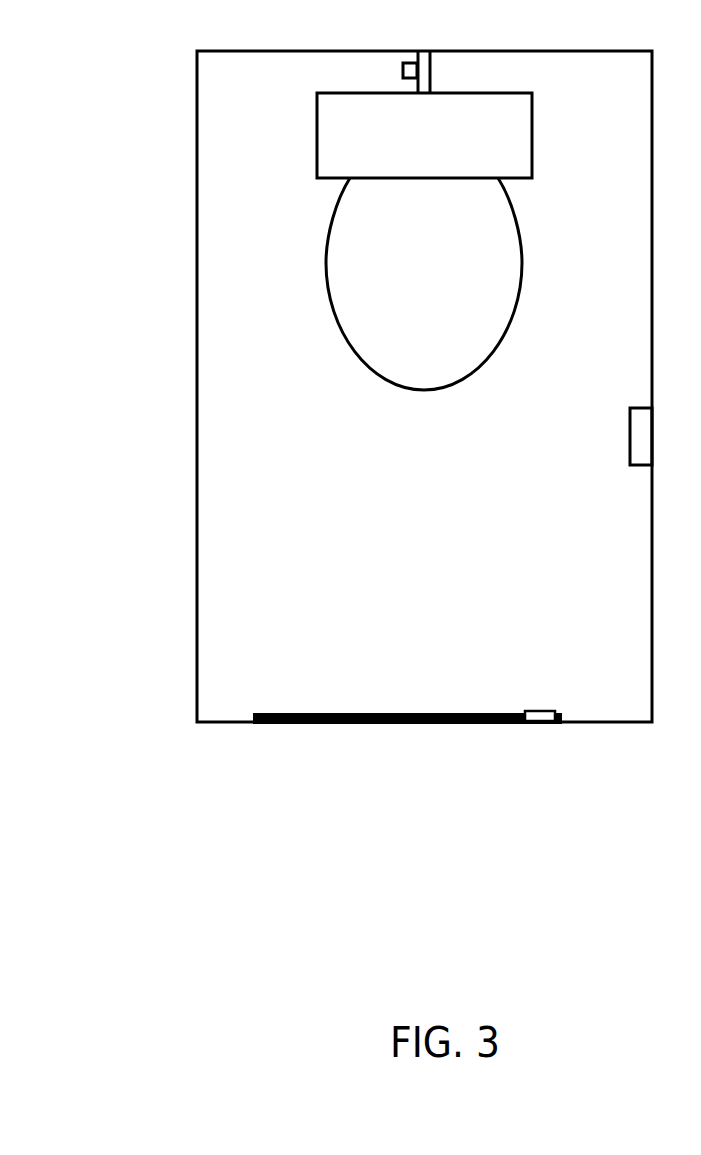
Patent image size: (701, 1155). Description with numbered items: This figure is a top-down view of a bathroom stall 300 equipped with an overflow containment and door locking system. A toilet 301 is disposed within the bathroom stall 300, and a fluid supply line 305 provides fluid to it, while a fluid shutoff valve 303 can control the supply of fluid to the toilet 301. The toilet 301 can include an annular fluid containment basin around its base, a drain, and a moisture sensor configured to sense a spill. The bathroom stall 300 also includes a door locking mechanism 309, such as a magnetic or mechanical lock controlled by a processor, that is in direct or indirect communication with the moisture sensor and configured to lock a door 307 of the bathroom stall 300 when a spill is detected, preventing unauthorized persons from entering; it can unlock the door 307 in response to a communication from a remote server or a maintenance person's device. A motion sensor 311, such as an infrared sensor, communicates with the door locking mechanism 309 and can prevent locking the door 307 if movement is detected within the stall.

The bathroom stall 300 is at (82, 451).
The toilet 301 is at (357, 376).
The fluid shutoff valve 303 is at (391, 69).
The fluid supply line 305 is at (445, 67).
The door 307 is at (361, 700).
The door locking mechanism 309 is at (545, 699).
The motion sensor 311 is at (618, 442).